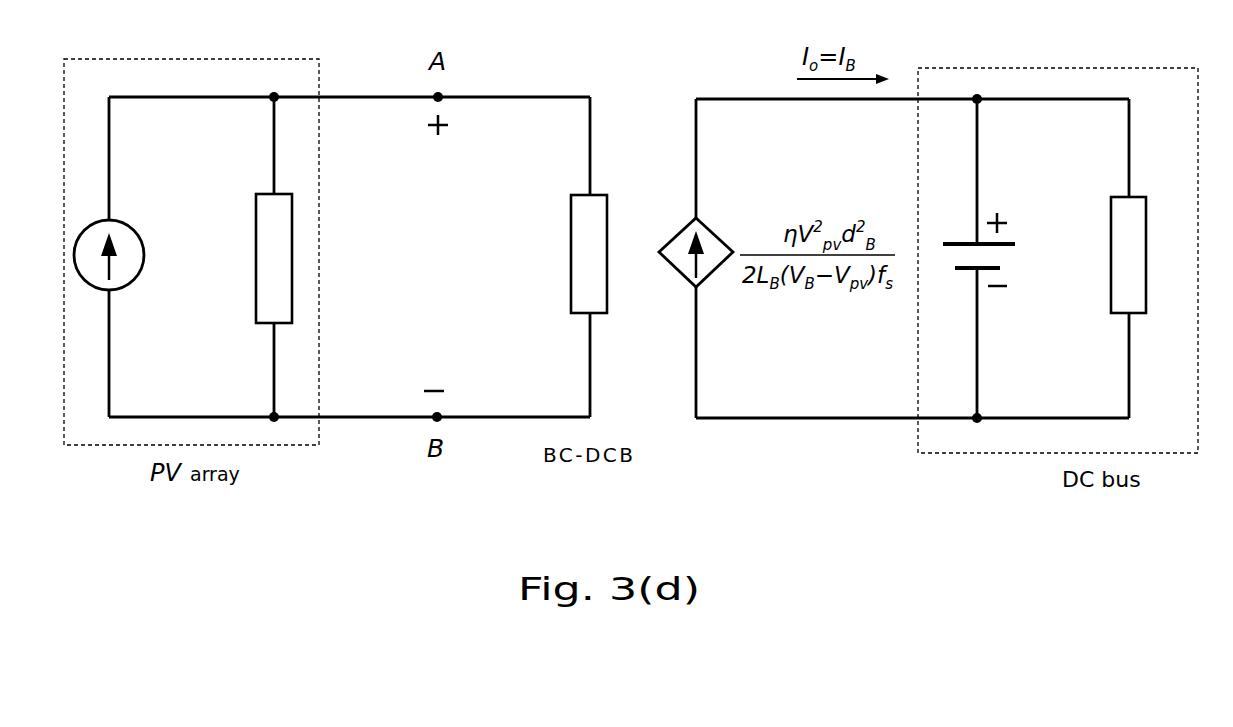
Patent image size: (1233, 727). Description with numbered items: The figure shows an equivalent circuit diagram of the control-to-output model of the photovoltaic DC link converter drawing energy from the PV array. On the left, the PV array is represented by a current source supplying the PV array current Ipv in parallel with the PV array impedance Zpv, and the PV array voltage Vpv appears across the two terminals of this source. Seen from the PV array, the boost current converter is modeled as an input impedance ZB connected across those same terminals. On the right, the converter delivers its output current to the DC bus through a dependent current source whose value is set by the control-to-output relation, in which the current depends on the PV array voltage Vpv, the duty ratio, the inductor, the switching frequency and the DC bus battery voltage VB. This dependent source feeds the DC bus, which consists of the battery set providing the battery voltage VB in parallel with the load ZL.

The PV array current Ipv is at (84, 255).
The PV array impedance Zpv is at (316, 257).
The PV array voltage Vpv is at (442, 253).
The boost current converter input impedance ZB is at (551, 254).
The DC bus battery voltage VB is at (1001, 258).
The load ZL is at (1150, 255).